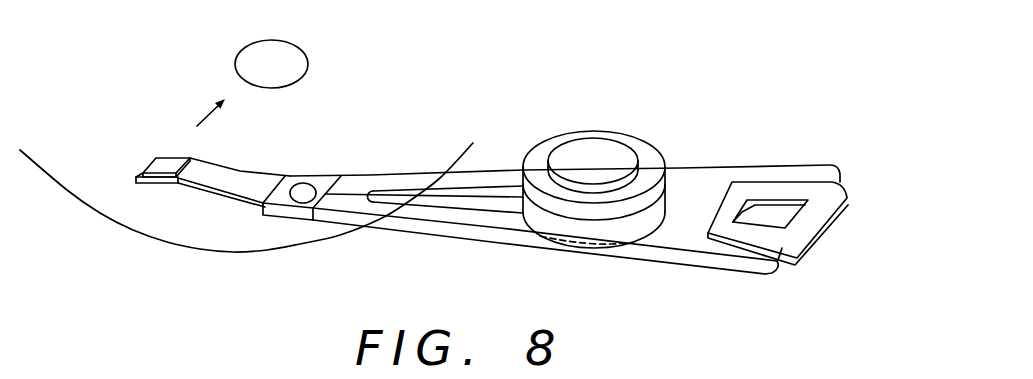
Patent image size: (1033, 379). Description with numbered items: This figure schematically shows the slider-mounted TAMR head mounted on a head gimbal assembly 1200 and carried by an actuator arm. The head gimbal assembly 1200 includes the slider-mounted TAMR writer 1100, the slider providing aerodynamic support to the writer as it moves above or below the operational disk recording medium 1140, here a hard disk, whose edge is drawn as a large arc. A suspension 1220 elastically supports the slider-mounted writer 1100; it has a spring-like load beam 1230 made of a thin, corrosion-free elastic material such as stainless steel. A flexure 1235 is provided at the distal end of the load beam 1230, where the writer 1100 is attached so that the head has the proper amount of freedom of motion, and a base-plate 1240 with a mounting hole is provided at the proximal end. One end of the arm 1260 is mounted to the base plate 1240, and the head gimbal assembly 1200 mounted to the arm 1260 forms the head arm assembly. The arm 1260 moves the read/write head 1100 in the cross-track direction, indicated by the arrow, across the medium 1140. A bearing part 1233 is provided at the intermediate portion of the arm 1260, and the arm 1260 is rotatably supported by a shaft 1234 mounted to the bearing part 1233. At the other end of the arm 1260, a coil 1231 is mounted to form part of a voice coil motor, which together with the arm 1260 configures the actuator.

The slider-mounted TAMR writer 1100 is at (158, 163).
The disk recording medium 1140 is at (134, 233).
The head gimbal assembly 1200 is at (250, 228).
The suspension 1220 is at (452, 124).
The load beam 1230 is at (265, 180).
The coil 1231 is at (818, 232).
The bearing part 1233 is at (541, 149).
The shaft 1234 is at (597, 152).
The flexure 1235 is at (136, 176).
The base-plate 1240 is at (332, 182).
The arm 1260 is at (408, 227).